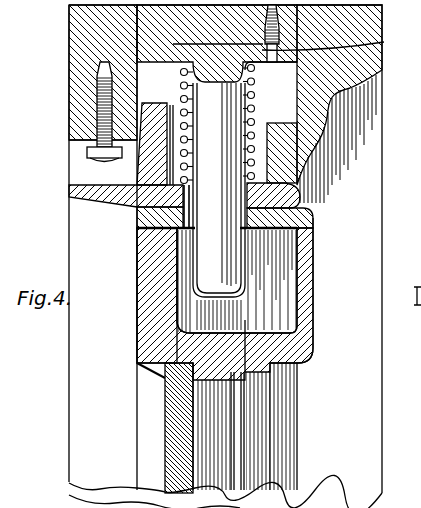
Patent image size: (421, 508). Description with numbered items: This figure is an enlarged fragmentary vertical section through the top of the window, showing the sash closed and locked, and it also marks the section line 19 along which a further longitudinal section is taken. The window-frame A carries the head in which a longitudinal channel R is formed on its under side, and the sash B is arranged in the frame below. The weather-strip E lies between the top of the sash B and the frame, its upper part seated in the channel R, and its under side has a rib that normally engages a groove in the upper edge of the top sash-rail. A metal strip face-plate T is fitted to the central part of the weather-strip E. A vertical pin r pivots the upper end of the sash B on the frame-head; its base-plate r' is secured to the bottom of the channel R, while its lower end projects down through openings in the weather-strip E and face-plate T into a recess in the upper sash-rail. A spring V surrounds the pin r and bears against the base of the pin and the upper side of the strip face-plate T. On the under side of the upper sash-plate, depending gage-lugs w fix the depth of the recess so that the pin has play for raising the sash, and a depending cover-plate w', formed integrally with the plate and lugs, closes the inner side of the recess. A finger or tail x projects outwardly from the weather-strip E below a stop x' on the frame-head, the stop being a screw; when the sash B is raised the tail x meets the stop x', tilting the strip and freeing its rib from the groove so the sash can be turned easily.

The window-frame A is at (340, 476).
The sash B is at (128, 366).
The weather-strip E is at (287, 152).
The longitudinal channel R is at (270, 122).
The strip face-plate T is at (300, 192).
The spring V is at (182, 87).
The valve seat v is at (137, 227).
The gage-lugs w is at (237, 280).
The cover-plate w' is at (307, 290).
The finger or tail x is at (105, 202).
The stop x' is at (74, 114).
The vertical pin r is at (210, 247).
The base-plate r' is at (330, 40).
The tube l' is at (215, 190).
The screw 19 is at (262, 44).